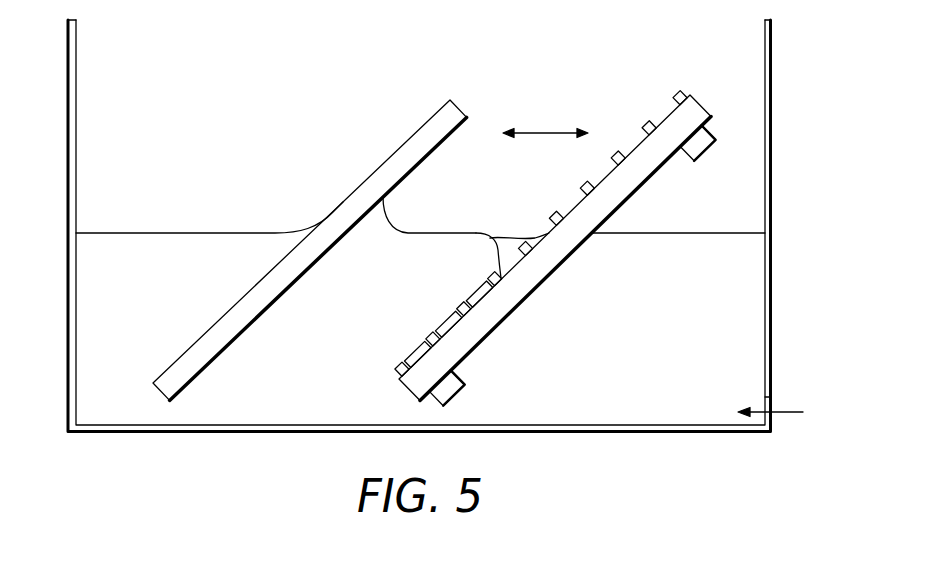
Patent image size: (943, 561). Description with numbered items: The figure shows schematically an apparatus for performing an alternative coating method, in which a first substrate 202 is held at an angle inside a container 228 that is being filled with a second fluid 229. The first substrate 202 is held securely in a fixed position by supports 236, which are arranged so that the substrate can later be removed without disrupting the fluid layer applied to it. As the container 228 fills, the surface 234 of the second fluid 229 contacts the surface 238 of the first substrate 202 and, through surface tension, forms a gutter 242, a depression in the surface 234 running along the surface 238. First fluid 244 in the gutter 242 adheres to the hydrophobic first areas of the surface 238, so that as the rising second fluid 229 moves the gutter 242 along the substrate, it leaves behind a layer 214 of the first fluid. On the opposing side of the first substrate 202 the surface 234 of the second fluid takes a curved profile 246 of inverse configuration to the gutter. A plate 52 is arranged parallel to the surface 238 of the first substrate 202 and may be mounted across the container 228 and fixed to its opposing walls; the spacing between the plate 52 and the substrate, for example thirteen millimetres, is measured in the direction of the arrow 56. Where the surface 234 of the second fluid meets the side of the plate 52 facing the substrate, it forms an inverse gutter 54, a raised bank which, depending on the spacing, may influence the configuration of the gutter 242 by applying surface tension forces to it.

The plate 52 is at (417, 130).
The inverse gutter 54 is at (389, 220).
The arrow 56 is at (540, 133).
The first substrate 202 is at (565, 265).
The layer of first fluid 214 is at (413, 350).
The container 228 is at (771, 122).
The second fluid 229 is at (742, 338).
The surface of the second fluid 234 is at (155, 233).
The supports 236 is at (463, 387).
The surface of the first substrate 238 is at (687, 98).
The gutter 242 is at (497, 258).
The first fluid 244 is at (500, 243).
The curved profile 246 is at (624, 232).